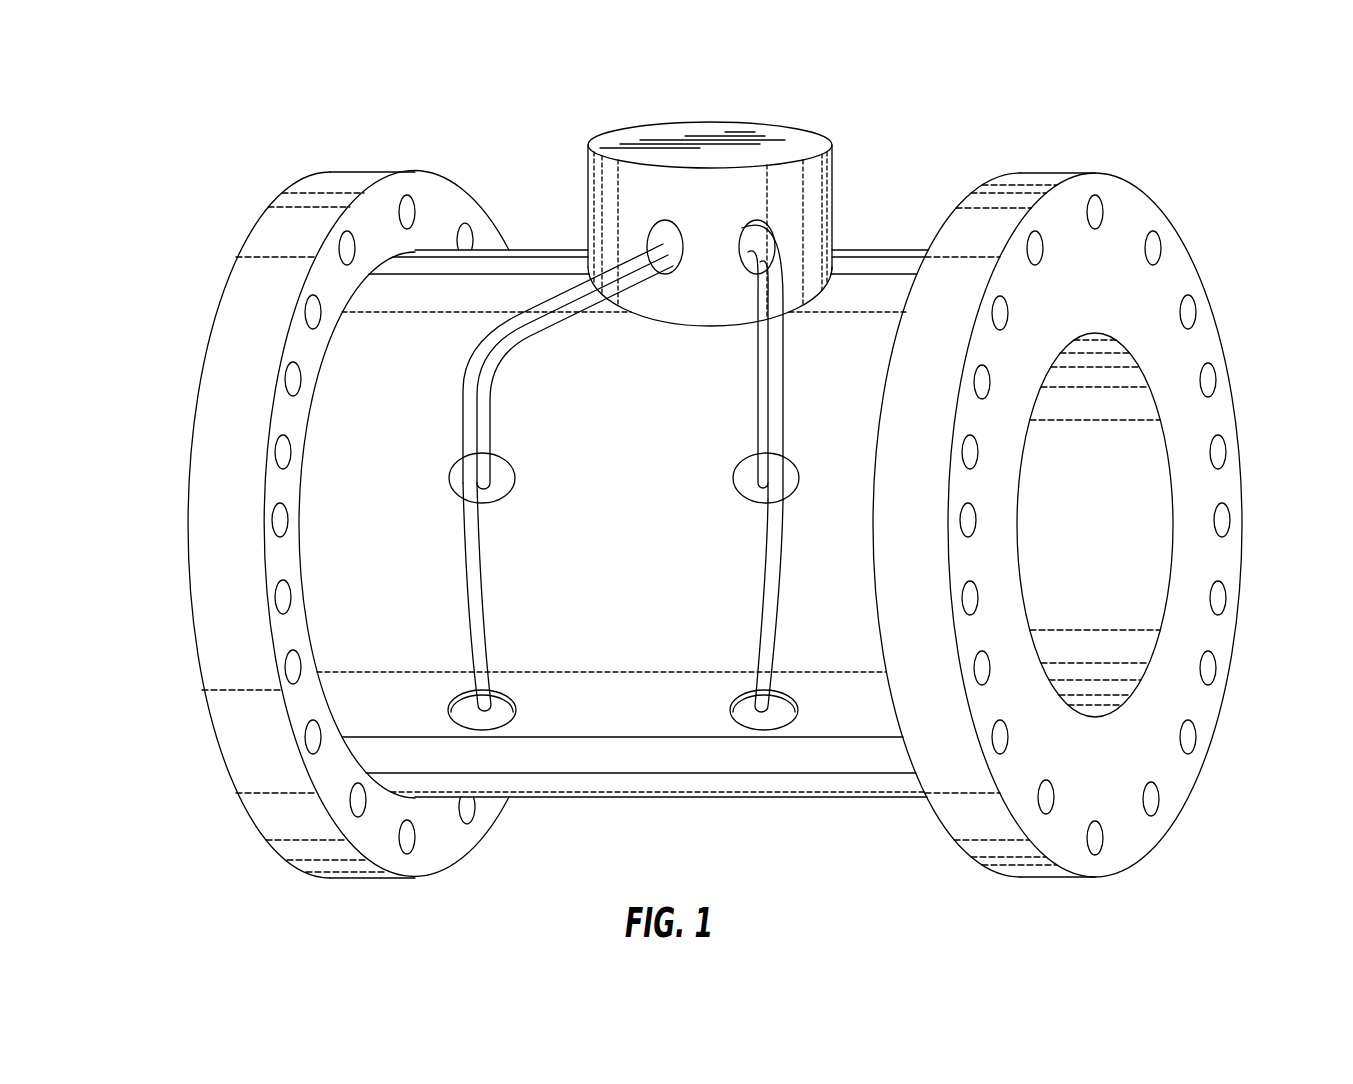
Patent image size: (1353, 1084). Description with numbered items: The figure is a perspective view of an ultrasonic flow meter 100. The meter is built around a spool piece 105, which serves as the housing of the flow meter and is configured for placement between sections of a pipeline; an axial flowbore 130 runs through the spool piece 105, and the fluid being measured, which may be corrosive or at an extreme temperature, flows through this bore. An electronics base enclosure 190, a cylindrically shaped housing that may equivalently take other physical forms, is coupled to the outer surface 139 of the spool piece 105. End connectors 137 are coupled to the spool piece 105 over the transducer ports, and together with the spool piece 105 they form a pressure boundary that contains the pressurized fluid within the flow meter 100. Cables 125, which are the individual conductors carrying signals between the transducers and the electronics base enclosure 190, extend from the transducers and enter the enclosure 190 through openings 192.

The ultrasonic flow meter 100 is at (990, 119).
The spool piece 105 is at (212, 480).
The cables 125 is at (472, 390).
The axial flowbore 130 is at (1105, 496).
The end connector 137 is at (740, 470).
The outer surface 139 is at (757, 800).
The electronics base enclosure 190 is at (650, 132).
The openings 192 is at (655, 228).